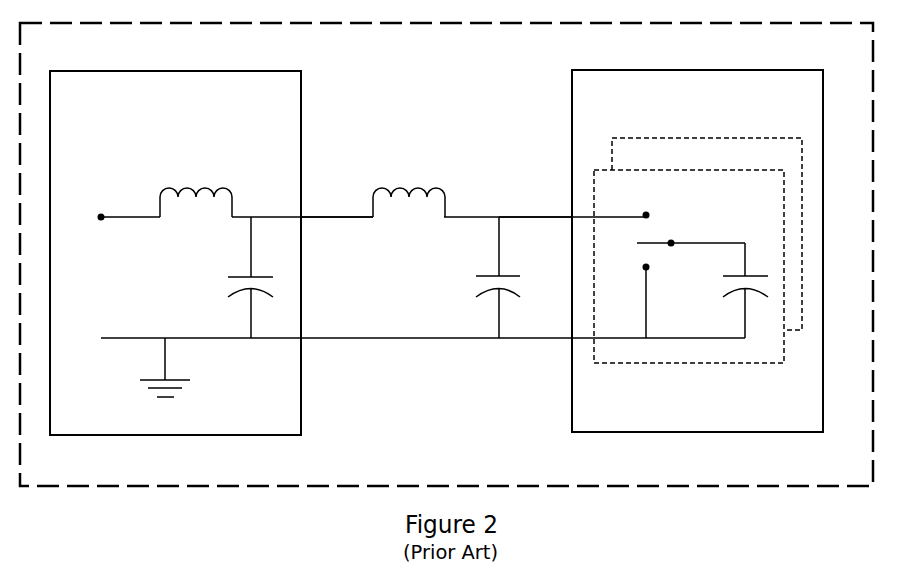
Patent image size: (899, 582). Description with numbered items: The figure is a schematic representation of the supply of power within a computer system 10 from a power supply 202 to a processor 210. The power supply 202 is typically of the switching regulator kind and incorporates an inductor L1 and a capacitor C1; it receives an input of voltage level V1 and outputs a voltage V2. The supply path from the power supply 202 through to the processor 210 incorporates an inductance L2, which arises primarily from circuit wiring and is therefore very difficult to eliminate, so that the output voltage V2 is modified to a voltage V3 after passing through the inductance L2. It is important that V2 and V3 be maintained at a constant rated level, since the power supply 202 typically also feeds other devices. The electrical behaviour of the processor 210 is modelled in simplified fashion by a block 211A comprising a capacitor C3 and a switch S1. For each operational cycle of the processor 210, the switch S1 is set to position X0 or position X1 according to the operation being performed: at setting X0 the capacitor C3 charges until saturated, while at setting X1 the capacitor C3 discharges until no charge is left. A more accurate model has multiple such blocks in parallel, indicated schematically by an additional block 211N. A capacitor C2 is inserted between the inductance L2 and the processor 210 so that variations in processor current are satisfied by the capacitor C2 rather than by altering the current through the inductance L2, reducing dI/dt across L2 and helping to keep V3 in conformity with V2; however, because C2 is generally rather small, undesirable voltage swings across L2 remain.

The system 10 is at (446, 254).
The power supply 202 is at (175, 253).
The processor 210 is at (697, 251).
The additional block 211N is at (707, 234).
The block 211A is at (689, 266).
The input voltage level V1 is at (97, 206).
The output voltage V2 is at (337, 204).
The modified voltage V3 is at (535, 204).
The inductor L1 is at (196, 213).
The inductance L2 is at (409, 214).
The capacitor C1 is at (245, 277).
The capacitor C2 is at (491, 277).
The capacitor C3 is at (739, 290).
The switch S1 is at (691, 254).
The switch position X0 is at (631, 204).
The switch position X1 is at (631, 301).